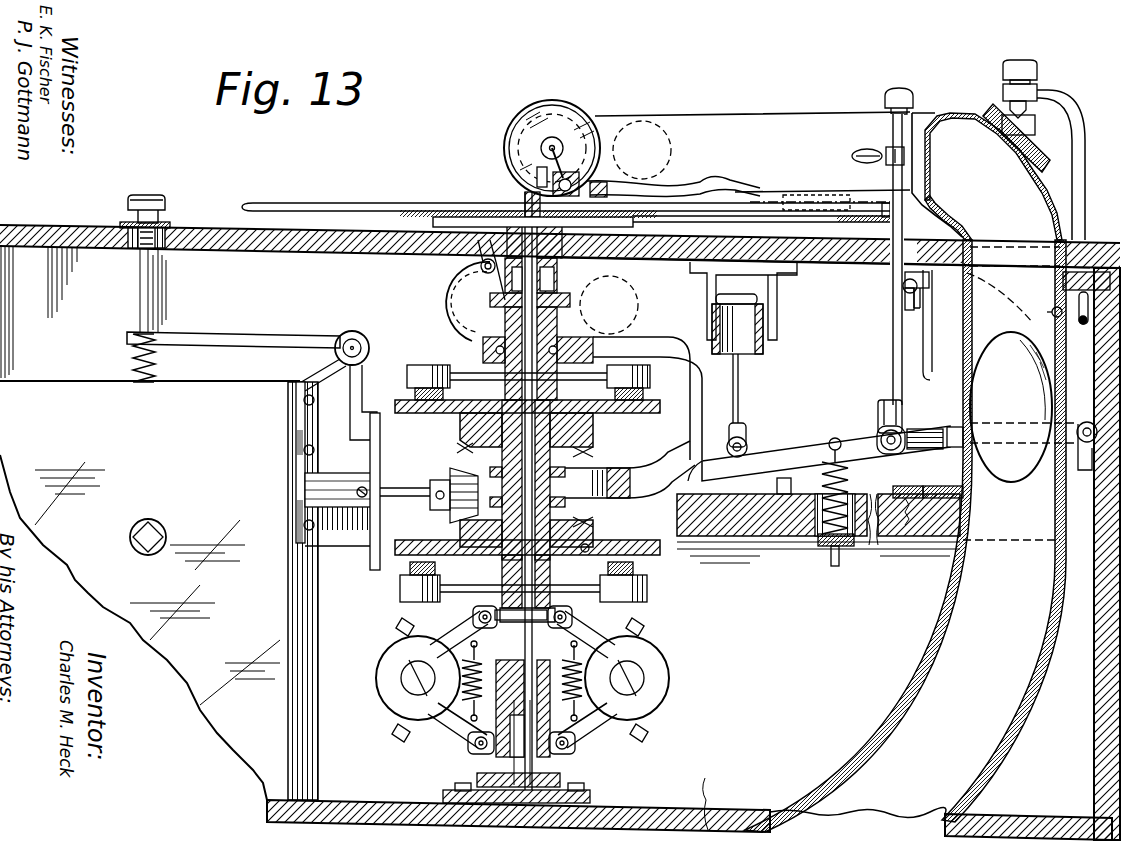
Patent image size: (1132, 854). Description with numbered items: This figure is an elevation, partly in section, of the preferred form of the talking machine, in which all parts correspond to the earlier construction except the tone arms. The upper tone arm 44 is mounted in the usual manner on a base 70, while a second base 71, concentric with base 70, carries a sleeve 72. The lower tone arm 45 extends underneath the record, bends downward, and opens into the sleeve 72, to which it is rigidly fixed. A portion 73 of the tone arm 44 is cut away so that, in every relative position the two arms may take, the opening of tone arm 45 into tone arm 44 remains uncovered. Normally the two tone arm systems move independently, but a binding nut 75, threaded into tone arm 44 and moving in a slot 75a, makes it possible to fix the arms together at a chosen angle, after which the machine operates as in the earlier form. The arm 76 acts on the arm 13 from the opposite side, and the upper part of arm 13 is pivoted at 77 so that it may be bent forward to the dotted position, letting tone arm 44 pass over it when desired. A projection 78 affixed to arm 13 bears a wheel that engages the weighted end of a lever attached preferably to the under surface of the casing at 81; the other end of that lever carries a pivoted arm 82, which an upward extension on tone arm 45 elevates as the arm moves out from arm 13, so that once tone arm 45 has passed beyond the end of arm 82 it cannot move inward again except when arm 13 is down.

The arm 13 is at (892, 324).
The tone arm 44 is at (784, 126).
The tone arm 45 is at (700, 417).
The base 70 is at (957, 492).
The base 71 is at (928, 486).
The sleeve 72 is at (1058, 343).
The cut-away portion of tone arm 73 is at (970, 364).
The binding nut 75 is at (1086, 300).
The slot 75a is at (1056, 309).
The arm 76 is at (883, 154).
The pivot 77 is at (903, 204).
The projection 78 is at (903, 288).
The attachment point on casing 81 is at (929, 277).
The arm 82 is at (922, 296).